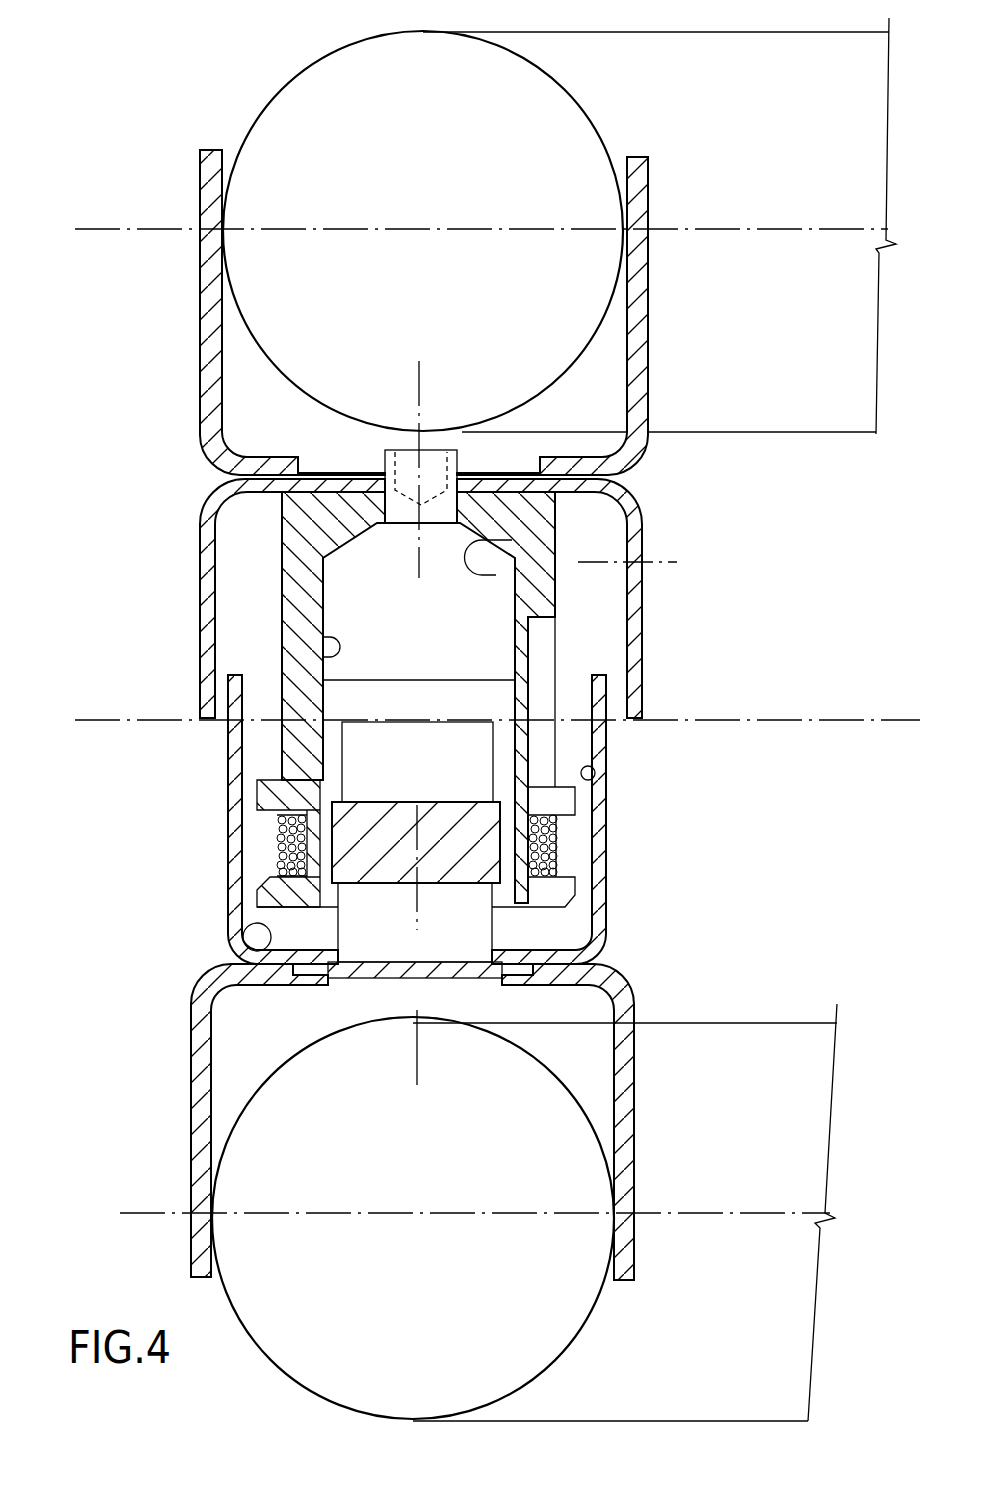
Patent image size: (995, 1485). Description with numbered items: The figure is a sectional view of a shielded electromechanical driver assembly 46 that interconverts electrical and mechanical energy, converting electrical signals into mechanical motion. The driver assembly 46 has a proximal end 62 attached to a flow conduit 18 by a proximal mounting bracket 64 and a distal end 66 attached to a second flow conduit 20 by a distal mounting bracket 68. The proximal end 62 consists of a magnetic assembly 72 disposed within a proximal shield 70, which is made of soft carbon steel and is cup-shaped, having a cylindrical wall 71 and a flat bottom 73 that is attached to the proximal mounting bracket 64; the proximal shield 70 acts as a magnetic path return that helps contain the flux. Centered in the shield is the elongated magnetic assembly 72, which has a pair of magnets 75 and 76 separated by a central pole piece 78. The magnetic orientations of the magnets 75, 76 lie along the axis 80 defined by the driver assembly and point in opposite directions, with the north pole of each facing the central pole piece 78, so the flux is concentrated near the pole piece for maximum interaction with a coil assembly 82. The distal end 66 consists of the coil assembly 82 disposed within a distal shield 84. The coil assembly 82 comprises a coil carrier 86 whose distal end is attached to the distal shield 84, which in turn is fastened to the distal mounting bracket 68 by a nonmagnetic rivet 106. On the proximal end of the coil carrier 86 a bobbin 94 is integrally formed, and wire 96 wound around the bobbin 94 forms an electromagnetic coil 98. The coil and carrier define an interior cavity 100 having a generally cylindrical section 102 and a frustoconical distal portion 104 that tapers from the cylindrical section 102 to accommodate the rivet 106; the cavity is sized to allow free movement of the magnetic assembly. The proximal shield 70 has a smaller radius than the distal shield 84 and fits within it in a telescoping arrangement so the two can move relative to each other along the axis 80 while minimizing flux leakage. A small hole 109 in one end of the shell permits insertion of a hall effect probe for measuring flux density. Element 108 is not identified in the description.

The flow conduit 18 is at (600, 1123).
The flow conduit 20 is at (596, 341).
The driver assembly 46 is at (144, 844).
The proximal end 62 is at (138, 1098).
The proximal mounting bracket 64 is at (636, 1047).
The distal end 66 is at (184, 351).
The distal mounting bracket 68 is at (649, 370).
The proximal shield 70 is at (613, 745).
The cylindrical wall 71 is at (595, 775).
The magnetic assembly 72 is at (508, 932).
The flat bottom 73 is at (243, 931).
The magnet 75 is at (343, 927).
The magnet 76 is at (343, 752).
The central pole piece 78 is at (330, 830).
The axis 80 is at (497, 721).
The coil assembly 82 is at (264, 548).
The distal shield 84 is at (203, 582).
The coil carrier 86 is at (557, 586).
The bobbin 94 is at (257, 800).
The wire 96 is at (277, 845).
The electromagnetic coil 98 is at (567, 840).
The interior cavity 100 is at (489, 622).
The cylindrical section 102 is at (322, 637).
The frustoconical distal portion 104 is at (496, 575).
The nonmagnetic rivet 106 is at (411, 466).
The annular passage 108 is at (544, 705).
The hole 109 is at (643, 550).